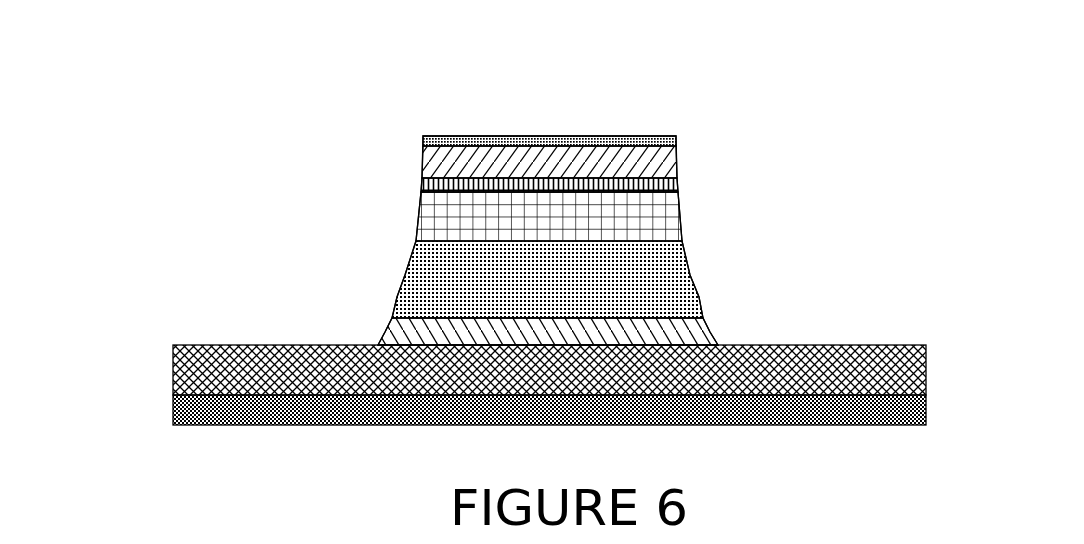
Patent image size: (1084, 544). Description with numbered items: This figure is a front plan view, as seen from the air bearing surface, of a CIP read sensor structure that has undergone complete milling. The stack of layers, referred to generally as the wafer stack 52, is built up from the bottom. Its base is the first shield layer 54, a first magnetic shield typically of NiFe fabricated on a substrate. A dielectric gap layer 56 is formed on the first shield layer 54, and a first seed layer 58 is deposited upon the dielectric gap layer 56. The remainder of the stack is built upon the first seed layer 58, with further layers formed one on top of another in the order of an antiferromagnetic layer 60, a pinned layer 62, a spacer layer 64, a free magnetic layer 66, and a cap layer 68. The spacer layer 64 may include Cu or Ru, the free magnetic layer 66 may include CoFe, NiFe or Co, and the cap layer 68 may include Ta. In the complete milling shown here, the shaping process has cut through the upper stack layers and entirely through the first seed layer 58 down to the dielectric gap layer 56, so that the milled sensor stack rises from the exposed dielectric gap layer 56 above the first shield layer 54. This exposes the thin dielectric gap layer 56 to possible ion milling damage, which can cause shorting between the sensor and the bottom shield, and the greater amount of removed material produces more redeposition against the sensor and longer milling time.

The wafer stack 52 is at (358, 198).
The first shield layer 54 is at (173, 408).
The dielectric gap layer 56 is at (203, 387).
The first seed layer 58 is at (380, 333).
The antiferromagnetic layer 60 is at (397, 297).
The pinned layer 62 is at (680, 213).
The spacer layer 64 is at (677, 177).
The free magnetic layer 66 is at (677, 157).
The cap layer 68 is at (677, 140).